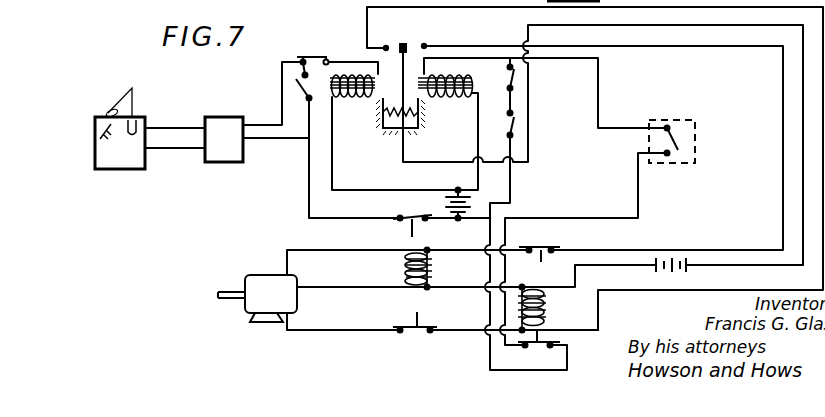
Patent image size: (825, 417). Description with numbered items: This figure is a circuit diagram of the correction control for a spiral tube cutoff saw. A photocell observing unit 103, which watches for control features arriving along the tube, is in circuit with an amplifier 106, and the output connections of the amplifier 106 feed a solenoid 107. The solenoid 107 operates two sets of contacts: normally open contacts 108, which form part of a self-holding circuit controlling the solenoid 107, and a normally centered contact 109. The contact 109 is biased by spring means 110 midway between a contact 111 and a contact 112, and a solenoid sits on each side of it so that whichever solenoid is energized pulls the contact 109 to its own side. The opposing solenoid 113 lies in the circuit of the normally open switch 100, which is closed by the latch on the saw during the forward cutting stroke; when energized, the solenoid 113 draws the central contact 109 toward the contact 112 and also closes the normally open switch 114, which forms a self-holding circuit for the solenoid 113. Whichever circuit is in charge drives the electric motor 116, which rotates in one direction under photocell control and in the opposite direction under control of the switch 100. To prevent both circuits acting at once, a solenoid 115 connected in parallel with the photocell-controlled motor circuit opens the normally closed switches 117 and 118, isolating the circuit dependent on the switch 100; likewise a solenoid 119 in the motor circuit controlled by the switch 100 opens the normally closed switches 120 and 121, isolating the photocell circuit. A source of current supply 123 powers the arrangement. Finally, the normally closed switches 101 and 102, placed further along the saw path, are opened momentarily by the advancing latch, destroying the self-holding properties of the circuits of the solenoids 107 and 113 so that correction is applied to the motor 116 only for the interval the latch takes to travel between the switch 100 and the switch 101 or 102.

The switch 100 is at (684, 104).
The normally closed switch 101 is at (306, 54).
The normally closed switch 102 is at (514, 122).
The photocell observing unit 103 is at (143, 72).
The amplifier 106 is at (216, 116).
The solenoid 107 is at (355, 96).
The normally open contacts 108 is at (295, 79).
The normally centered contact 109 is at (403, 43).
The spring means 110 is at (385, 125).
The contact 111 is at (386, 47).
The contact 112 is at (424, 45).
The solenoid 113 is at (448, 95).
The normally open switch 114 is at (514, 78).
The solenoid 115 is at (547, 311).
The electric motor 116 is at (261, 268).
The normally closed switch 117 is at (543, 260).
The normally closed switch 118 is at (556, 343).
The solenoid 119 is at (433, 270).
The normally closed switch 120 is at (414, 212).
The normally closed switch 121 is at (425, 326).
The source of current supply 123 is at (684, 273).